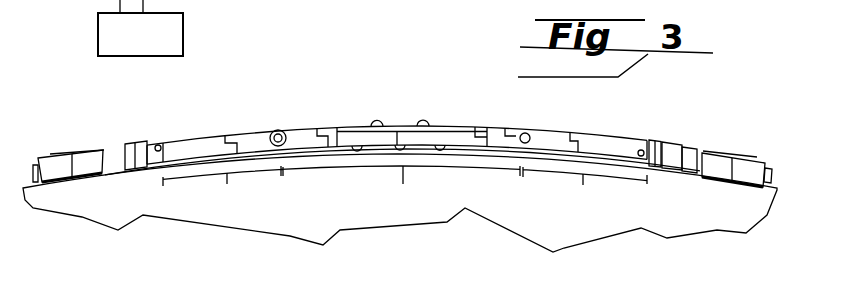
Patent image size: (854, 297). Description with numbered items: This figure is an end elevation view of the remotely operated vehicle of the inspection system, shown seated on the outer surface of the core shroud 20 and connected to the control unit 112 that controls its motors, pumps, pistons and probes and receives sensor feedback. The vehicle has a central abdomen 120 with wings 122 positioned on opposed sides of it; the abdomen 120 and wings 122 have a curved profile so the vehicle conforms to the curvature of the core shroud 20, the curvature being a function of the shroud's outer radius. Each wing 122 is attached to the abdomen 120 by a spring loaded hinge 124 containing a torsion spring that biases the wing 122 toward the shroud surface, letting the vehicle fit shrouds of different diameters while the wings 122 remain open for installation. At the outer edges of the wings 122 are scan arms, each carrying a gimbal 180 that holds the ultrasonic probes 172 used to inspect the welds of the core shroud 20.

The control unit 112 is at (140, 28).
The core shroud 20 is at (32, 186).
The gimbal 180 is at (95, 130).
The ultrasonic probes 172 is at (57, 177).
The spring loaded hinge 124 is at (276, 131).
The wings 122 is at (405, 169).
The abdomen 120 is at (400, 165).